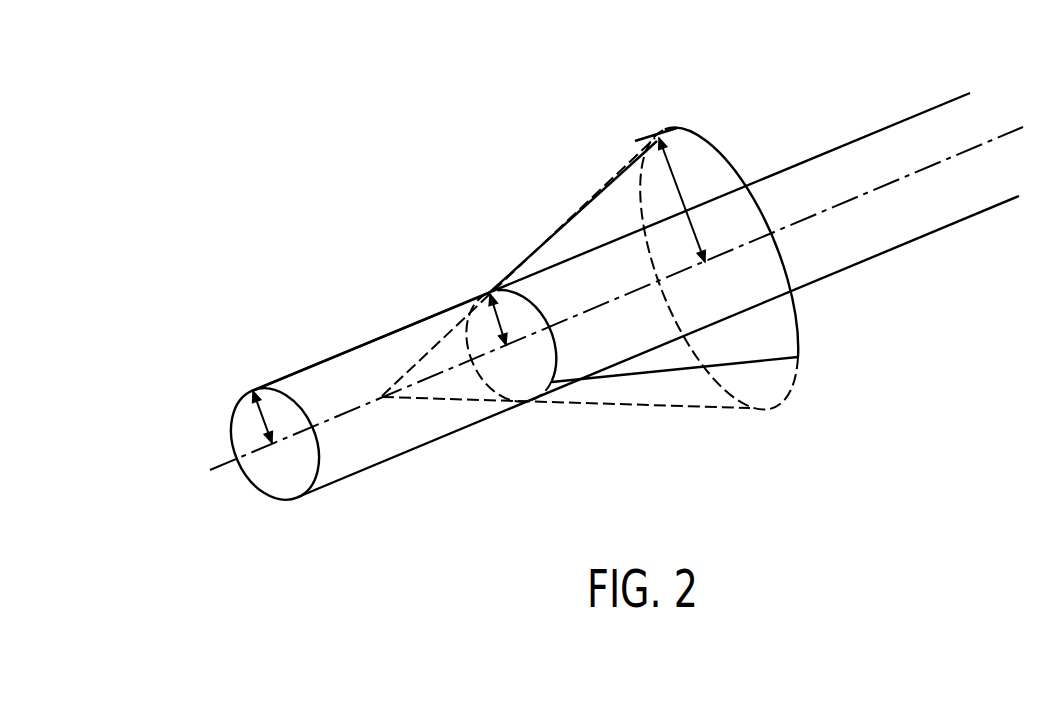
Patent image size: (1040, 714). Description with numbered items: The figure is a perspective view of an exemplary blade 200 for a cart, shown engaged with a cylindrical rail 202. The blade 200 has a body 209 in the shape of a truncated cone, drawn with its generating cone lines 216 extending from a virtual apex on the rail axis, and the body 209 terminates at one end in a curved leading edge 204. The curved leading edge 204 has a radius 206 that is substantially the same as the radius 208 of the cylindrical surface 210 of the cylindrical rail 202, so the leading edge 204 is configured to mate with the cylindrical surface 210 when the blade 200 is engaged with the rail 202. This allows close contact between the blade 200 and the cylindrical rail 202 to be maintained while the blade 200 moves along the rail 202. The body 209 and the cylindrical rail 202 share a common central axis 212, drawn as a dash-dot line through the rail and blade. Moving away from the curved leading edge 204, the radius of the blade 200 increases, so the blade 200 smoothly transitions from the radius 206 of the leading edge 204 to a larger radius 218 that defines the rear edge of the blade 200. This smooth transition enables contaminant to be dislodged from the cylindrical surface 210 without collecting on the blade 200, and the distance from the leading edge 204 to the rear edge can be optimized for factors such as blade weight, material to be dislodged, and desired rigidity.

The blade 200 is at (802, 442).
The cylindrical rail 202 is at (902, 120).
The curved leading edge 204 is at (533, 298).
The radius of curved leading edge 206 is at (489, 296).
The radius of cylindrical surface 208 is at (256, 415).
The body 209 is at (780, 334).
The cylindrical surface 210 is at (364, 357).
The central axis 212 is at (843, 203).
The light emission cone 216 is at (580, 211).
The larger radius 218 is at (678, 183).